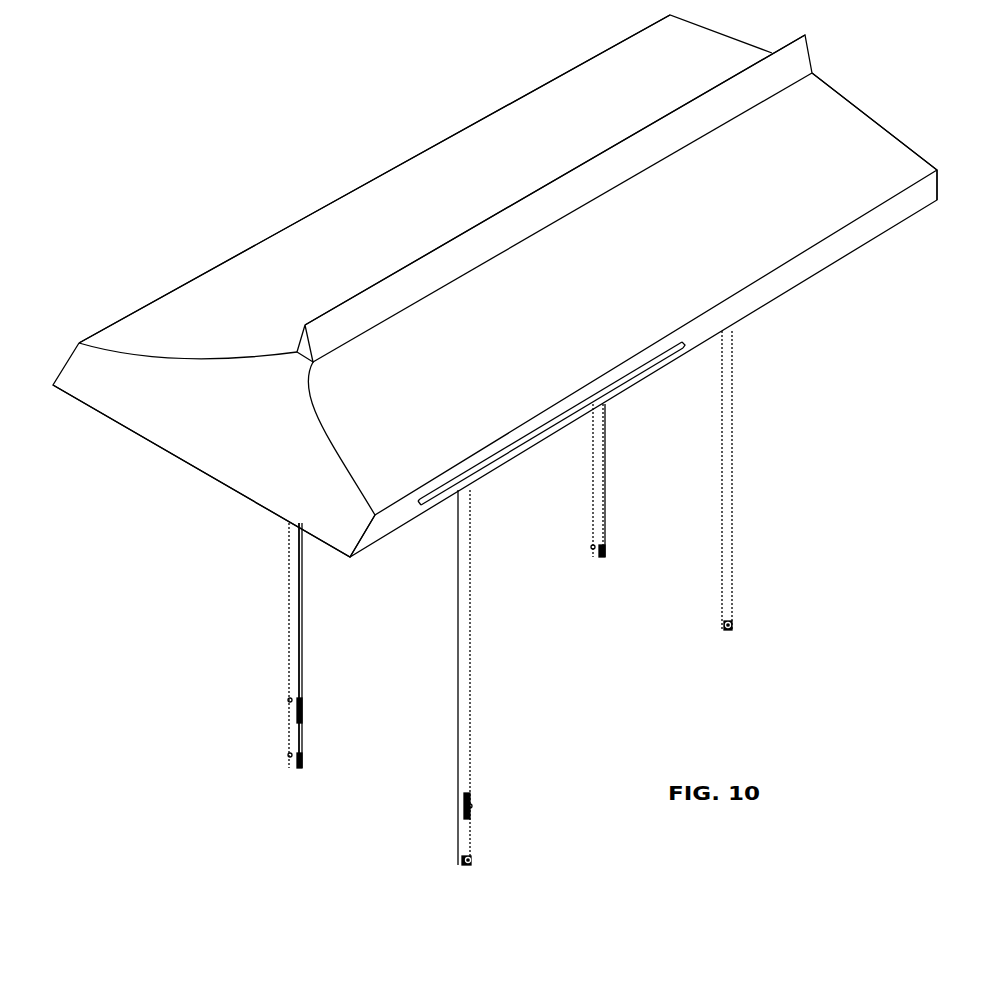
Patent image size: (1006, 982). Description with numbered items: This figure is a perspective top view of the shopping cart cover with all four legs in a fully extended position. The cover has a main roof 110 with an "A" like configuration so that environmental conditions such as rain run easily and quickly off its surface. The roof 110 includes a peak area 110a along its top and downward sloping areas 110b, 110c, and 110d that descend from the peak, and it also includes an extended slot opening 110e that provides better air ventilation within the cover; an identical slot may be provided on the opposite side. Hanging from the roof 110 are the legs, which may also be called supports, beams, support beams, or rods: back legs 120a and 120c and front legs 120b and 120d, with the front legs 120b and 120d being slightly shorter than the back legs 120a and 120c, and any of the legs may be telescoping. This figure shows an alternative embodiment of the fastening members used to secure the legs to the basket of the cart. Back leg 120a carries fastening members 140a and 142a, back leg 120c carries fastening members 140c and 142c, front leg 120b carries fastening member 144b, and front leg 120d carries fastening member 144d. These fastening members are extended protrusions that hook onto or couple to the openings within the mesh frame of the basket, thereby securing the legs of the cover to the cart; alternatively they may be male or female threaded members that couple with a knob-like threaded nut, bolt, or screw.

The main roof 110 is at (827, 133).
The peak area 110a is at (497, 235).
The downward sloping area 110b is at (320, 250).
The downward sloping area 110c is at (777, 200).
The downward sloping area 110d is at (228, 458).
The extended slot opening 110e is at (496, 468).
The back leg 120a is at (290, 587).
The front leg 120b is at (605, 450).
The back leg 120c is at (470, 604).
The front leg 120d is at (730, 505).
The fastening member 140a is at (276, 699).
The fastening member 140c is at (486, 803).
The fastening member 142a is at (274, 755).
The fastening member 142c is at (488, 860).
The fastening member 144b is at (581, 528).
The fastening member 144d is at (752, 625).